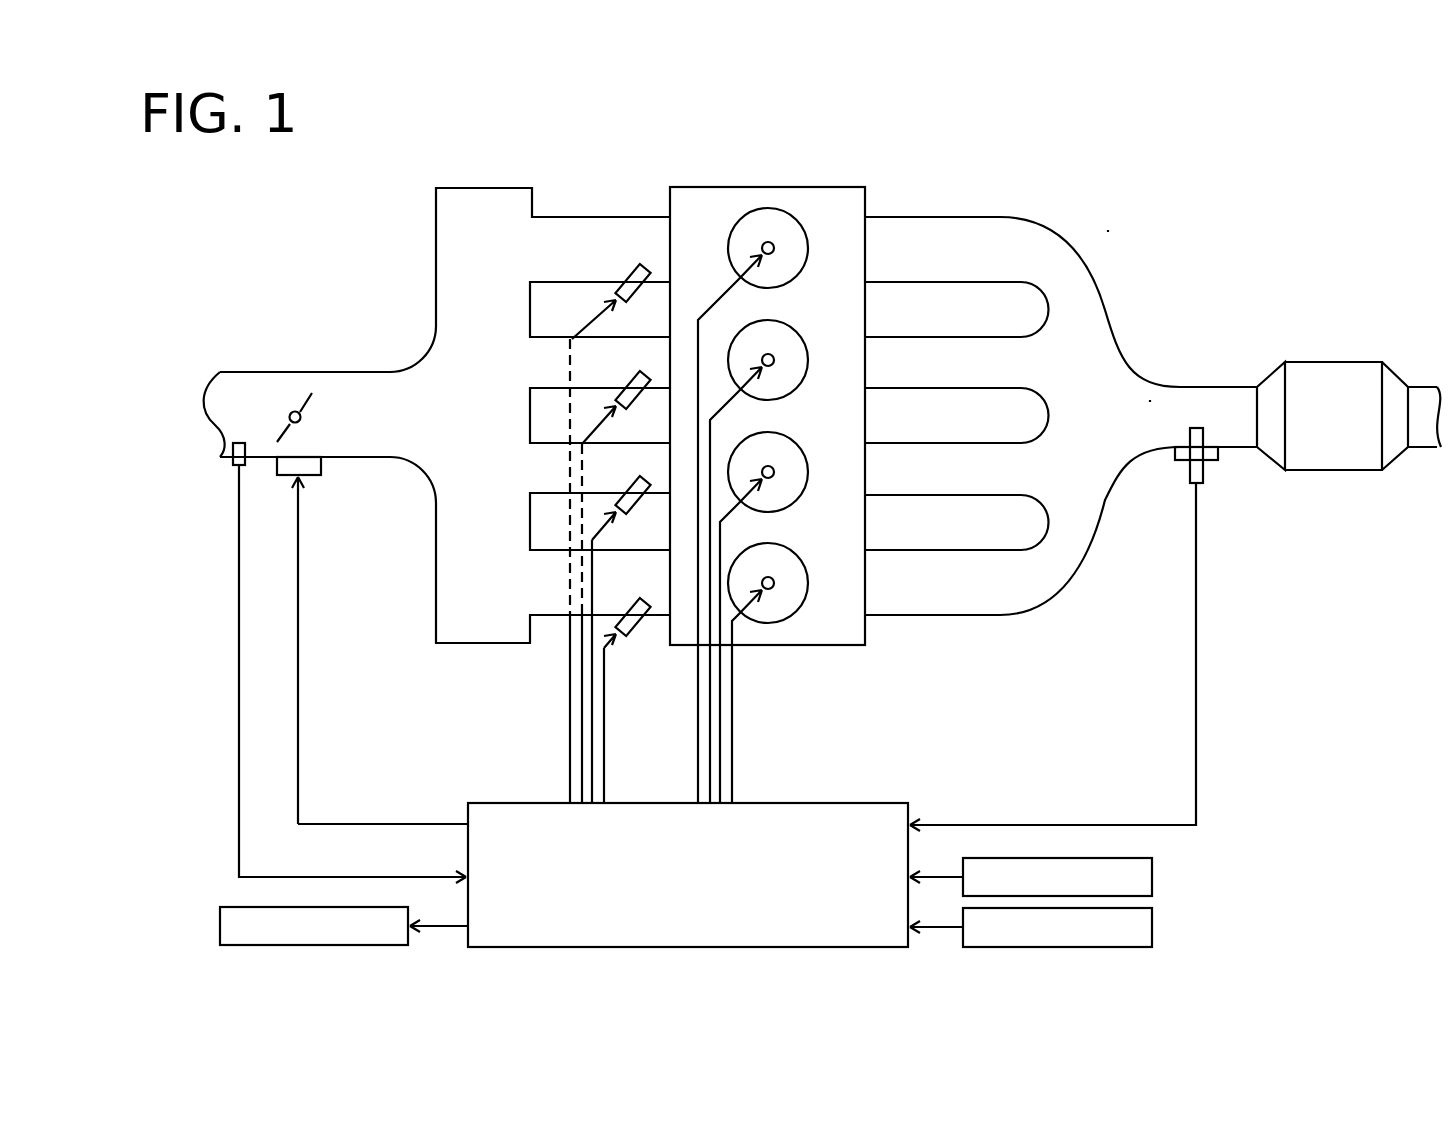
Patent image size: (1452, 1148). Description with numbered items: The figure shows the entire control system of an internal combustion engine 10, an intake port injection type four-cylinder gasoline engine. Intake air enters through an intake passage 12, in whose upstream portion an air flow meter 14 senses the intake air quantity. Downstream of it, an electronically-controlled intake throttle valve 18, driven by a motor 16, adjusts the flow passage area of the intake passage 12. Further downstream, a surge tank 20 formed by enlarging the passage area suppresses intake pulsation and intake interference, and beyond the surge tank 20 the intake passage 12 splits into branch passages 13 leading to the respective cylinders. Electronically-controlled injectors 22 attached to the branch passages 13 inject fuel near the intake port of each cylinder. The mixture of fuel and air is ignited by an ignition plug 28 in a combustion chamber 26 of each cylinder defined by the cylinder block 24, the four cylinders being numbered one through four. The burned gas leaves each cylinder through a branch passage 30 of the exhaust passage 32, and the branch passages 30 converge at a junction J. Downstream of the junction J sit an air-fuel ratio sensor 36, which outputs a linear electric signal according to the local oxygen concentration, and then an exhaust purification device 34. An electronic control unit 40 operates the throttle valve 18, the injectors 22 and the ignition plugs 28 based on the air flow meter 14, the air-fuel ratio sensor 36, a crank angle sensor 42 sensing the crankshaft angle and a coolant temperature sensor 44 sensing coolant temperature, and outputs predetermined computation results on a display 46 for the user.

The internal combustion engine 10 is at (1128, 195).
The intake passage 12 is at (266, 376).
The branch passages 13 is at (553, 222).
The air flow meter 14 is at (232, 458).
The motor 16 is at (321, 465).
The intake throttle valve 18 is at (301, 417).
The surge tank 20 is at (458, 188).
The injectors 22 is at (640, 295).
The cylinder block 24 is at (715, 188).
The combustion chamber 26 is at (808, 248).
The ignition plug 28 is at (775, 250).
The branch passage 30 is at (938, 283).
The exhaust passage 32 is at (1243, 451).
The junction J is at (1213, 342).
The exhaust purification device 34 is at (1367, 362).
The air-fuel ratio sensor 36 is at (1203, 490).
The electronic control unit 40 is at (877, 803).
The crank angle sensor 42 is at (1152, 877).
The coolant temperature sensor 44 is at (1152, 927).
The display 46 is at (218, 924).